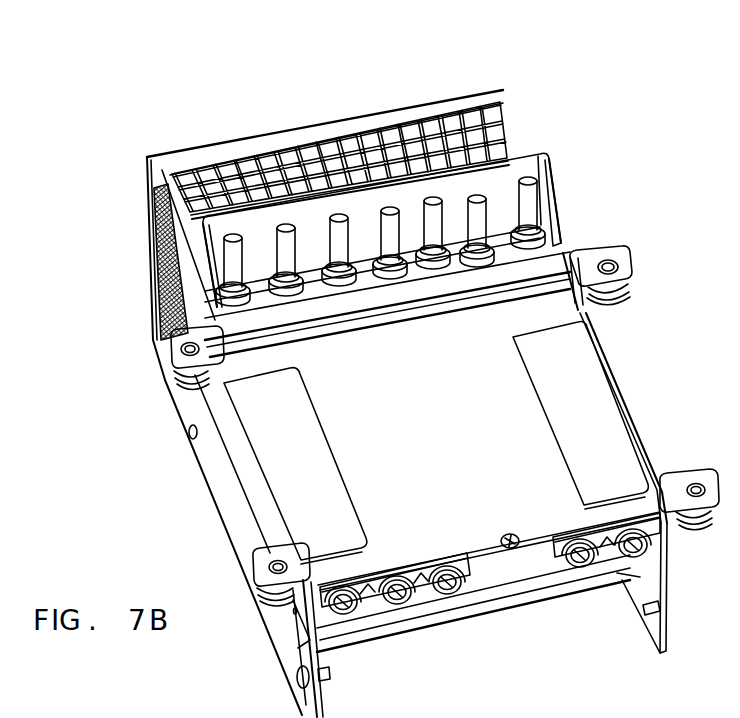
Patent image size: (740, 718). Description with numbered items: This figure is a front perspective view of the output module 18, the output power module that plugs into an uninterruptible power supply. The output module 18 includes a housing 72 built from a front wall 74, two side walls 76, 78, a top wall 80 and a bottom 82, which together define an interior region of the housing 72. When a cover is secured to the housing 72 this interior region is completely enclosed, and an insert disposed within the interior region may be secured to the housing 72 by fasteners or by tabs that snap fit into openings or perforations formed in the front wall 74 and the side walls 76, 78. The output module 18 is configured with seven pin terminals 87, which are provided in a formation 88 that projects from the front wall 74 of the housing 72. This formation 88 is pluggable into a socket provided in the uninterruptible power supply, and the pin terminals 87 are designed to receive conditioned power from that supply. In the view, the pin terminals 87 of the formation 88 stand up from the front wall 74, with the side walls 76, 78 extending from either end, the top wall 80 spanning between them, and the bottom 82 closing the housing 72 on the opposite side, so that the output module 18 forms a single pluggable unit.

The output module 18 is at (656, 208).
The housing 72 is at (150, 296).
The front wall 74 is at (365, 490).
The side wall 76 is at (610, 370).
The side wall 78 is at (183, 400).
The top wall 80 is at (403, 105).
The bottom 82 is at (503, 600).
The pin terminals 87 is at (353, 205).
The formation 88 is at (553, 163).